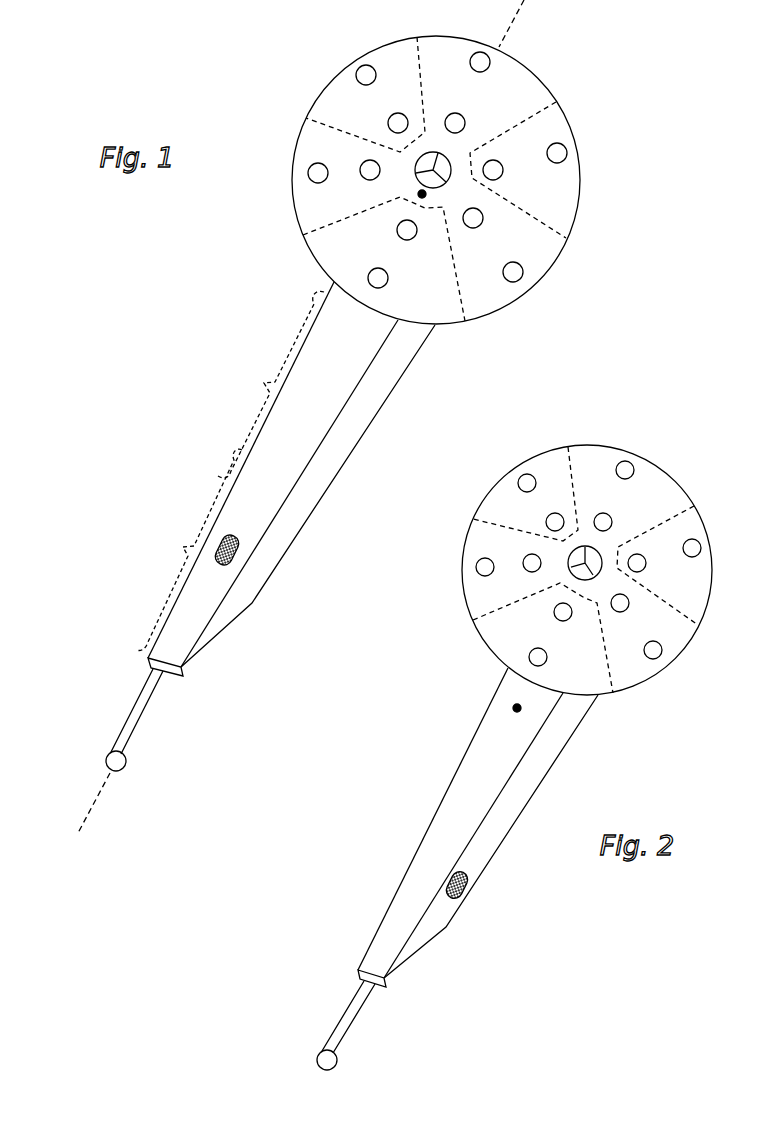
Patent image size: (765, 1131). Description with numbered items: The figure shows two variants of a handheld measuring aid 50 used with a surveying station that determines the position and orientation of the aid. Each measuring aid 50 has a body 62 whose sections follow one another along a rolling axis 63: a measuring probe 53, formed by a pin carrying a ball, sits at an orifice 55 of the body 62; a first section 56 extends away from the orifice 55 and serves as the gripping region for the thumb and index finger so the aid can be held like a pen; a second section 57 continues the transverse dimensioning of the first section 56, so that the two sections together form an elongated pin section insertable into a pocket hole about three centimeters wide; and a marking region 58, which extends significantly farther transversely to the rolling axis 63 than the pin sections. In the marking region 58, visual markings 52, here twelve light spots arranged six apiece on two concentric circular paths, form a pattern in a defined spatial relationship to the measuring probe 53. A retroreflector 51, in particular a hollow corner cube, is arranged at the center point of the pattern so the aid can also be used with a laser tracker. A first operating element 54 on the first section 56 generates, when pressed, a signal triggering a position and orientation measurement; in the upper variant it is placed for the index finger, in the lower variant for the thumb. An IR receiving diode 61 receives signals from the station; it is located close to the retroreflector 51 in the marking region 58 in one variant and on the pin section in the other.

In FIG. 1, the measuring aid 50 is at (107, 292).
In FIG. 2, the measuring aid 50 is at (447, 1036).
In FIG. 1, the retroreflector 51 is at (436, 172).
In FIG. 1, the visual markings 52 is at (357, 72).
In FIG. 1, the measuring probe 53 is at (108, 753).
In FIG. 1, the first operating element 54 is at (232, 565).
In FIG. 2, the first operating element 54 is at (462, 900).
In FIG. 1, the orifice 55 is at (151, 667).
In FIG. 1, the first section 56 is at (181, 548).
In FIG. 1, the second section 57 is at (264, 380).
In FIG. 1, the marking region 58 is at (547, 311).
In FIG. 1, the IR receiving diode 61 is at (418, 190).
In FIG. 2, the IR receiving diode 61 is at (514, 705).
In FIG. 1, the body 62 is at (312, 400).
In FIG. 1, the rolling axis 63 is at (507, 32).